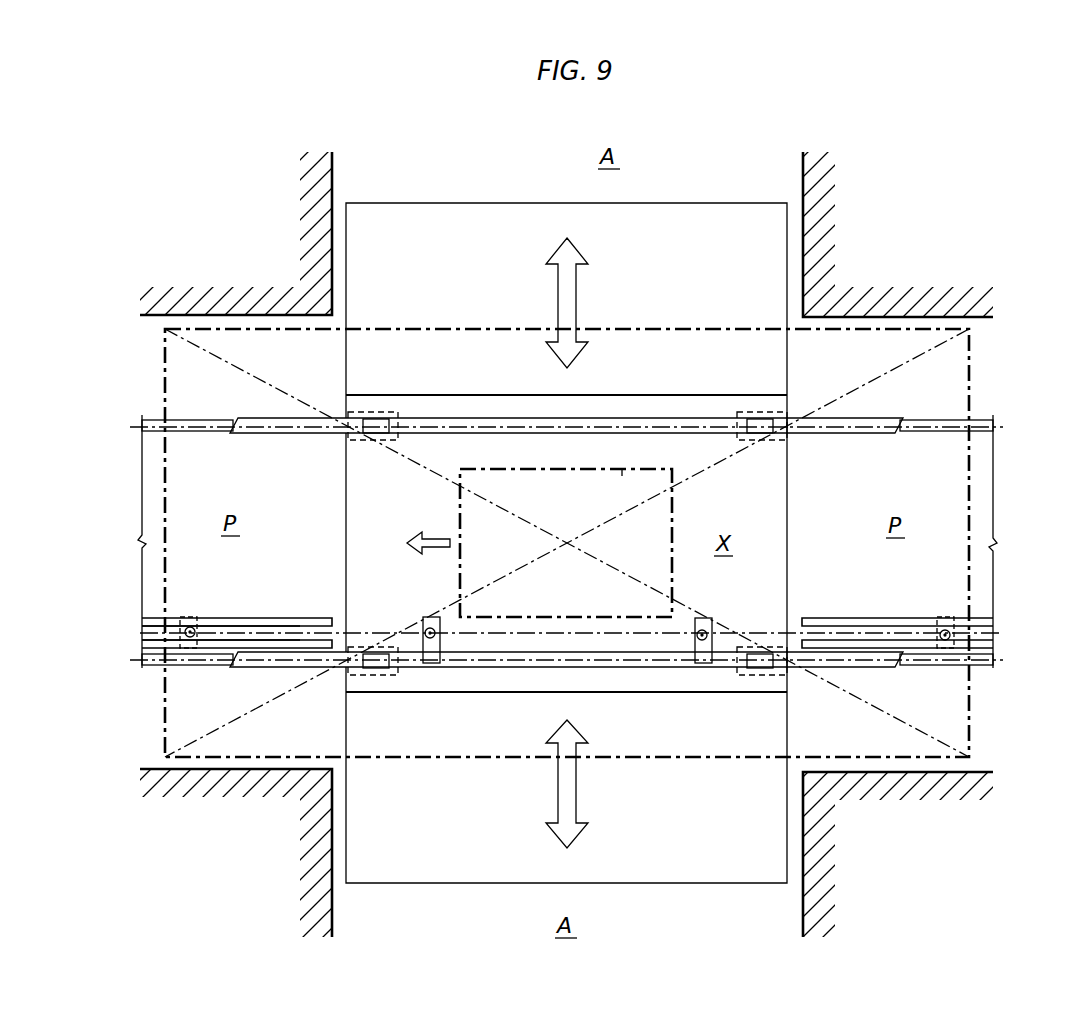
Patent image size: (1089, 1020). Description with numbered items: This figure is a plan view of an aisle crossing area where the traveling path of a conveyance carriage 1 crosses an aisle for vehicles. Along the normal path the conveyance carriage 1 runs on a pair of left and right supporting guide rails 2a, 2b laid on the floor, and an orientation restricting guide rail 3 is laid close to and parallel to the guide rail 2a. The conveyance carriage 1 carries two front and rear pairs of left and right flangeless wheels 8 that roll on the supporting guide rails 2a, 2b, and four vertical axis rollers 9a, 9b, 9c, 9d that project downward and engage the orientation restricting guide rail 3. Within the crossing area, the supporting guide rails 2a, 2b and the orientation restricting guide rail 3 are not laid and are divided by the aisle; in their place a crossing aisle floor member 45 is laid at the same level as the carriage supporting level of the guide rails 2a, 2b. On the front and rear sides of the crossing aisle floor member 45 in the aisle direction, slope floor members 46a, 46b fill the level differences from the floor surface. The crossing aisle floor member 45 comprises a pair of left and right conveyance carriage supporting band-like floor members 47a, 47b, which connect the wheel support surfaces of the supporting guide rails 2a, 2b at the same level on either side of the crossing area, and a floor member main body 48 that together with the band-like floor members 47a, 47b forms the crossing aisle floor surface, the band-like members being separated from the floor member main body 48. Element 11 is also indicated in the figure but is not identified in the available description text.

The conveyance carriage 1 is at (972, 386).
The supporting guide rail 2a is at (190, 668).
The supporting guide rail 2b is at (185, 418).
The orientation restricting guide rail 3 is at (233, 618).
The wheels 8 is at (375, 412).
The vertical axis roller 9a is at (185, 615).
The vertical axis roller 9b is at (425, 615).
The vertical axis roller 9c is at (718, 618).
The vertical axis roller 9d is at (930, 618).
The slider 11 is at (622, 468).
The crossing aisle floor member 45 is at (589, 508).
The slope floor member 46a is at (453, 848).
The slope floor member 46b is at (460, 248).
The conveyance carriage supporting band-like floor member 47a is at (512, 667).
The conveyance carriage supporting band-like floor member 47b is at (470, 422).
The floor member main body 48 is at (683, 410).